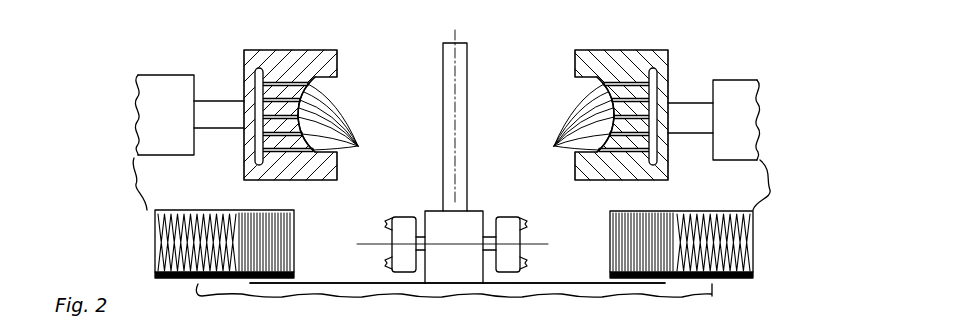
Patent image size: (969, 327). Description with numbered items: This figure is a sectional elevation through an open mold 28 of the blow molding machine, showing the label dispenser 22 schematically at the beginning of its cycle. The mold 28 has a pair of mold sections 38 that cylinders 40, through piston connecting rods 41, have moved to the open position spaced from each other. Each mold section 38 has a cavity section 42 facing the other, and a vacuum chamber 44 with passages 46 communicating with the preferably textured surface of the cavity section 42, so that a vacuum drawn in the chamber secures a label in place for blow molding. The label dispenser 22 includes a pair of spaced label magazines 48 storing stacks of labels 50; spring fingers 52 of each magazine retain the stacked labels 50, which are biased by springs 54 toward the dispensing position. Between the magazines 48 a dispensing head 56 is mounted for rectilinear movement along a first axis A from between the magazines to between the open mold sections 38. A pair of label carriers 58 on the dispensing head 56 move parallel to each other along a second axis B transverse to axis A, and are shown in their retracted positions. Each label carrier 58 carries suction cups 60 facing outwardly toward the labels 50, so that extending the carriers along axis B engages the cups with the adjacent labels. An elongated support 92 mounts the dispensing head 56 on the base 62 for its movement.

The label dispenser 22 is at (128, 138).
The mold 28 is at (632, 50).
The mold section 38 is at (262, 55).
The cylinder 40 is at (158, 82).
The piston connecting rod 41 is at (220, 103).
The cavity section 42 is at (334, 79).
The vacuum chamber 44 is at (272, 62).
The passage 46 is at (456, 121).
The label magazine 48 is at (189, 281).
The label 50 is at (267, 283).
The spring finger 52 is at (296, 211).
The spring 54 is at (182, 233).
The dispensing head 56 is at (482, 208).
The label carrier 58 is at (415, 216).
The suction cup 60 is at (387, 262).
The base 62 is at (388, 298).
The elongated support 92 is at (467, 122).
The first axis A is at (458, 40).
The second axis B is at (476, 243).